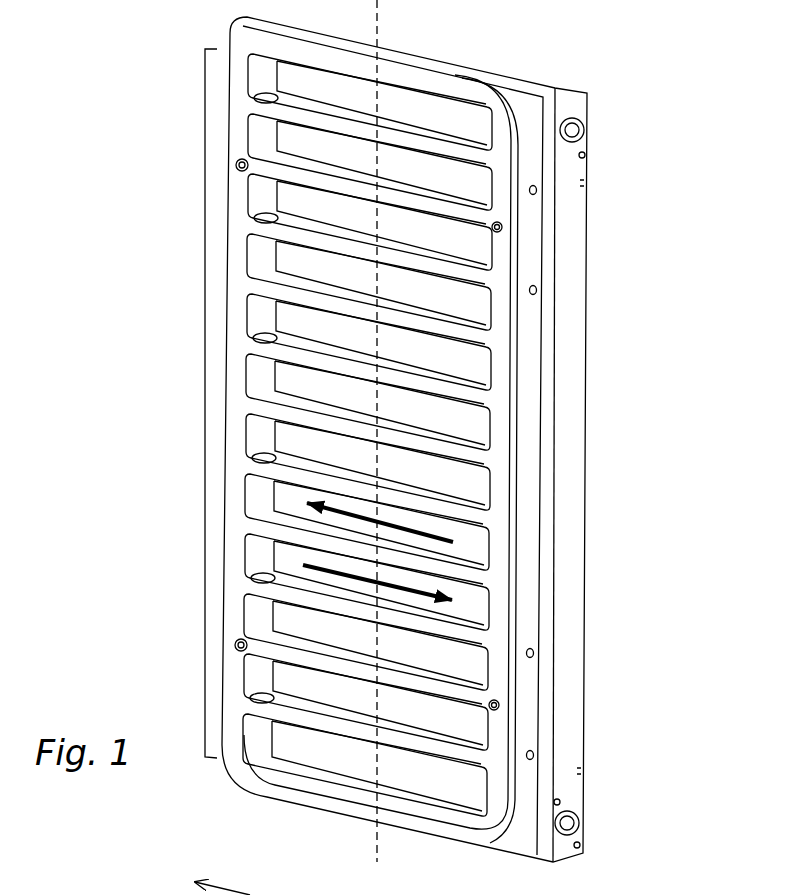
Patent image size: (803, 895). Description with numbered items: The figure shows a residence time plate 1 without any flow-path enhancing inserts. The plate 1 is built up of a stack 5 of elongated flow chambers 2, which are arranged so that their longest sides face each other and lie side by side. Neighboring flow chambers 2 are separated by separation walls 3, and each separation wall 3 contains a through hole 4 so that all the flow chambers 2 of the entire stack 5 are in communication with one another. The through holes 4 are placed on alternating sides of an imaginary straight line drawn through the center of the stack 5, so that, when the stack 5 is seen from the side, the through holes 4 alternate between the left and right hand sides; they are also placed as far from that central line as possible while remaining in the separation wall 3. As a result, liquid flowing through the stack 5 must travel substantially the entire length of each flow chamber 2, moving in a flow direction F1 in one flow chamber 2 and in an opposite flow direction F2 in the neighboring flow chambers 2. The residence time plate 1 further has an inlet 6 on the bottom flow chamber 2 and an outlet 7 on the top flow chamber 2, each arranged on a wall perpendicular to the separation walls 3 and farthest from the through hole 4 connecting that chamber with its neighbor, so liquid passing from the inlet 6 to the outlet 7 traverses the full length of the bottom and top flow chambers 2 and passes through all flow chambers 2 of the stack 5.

The residence time plate 1 is at (107, 178).
The flow chamber 2 is at (467, 185).
The separation wall 3 is at (467, 270).
The through hole 4 is at (268, 338).
The stack 5 is at (205, 403).
The inlet 6 is at (579, 823).
The outlet 7 is at (578, 127).
The flow direction F1 is at (423, 585).
The flow direction F2 is at (428, 525).